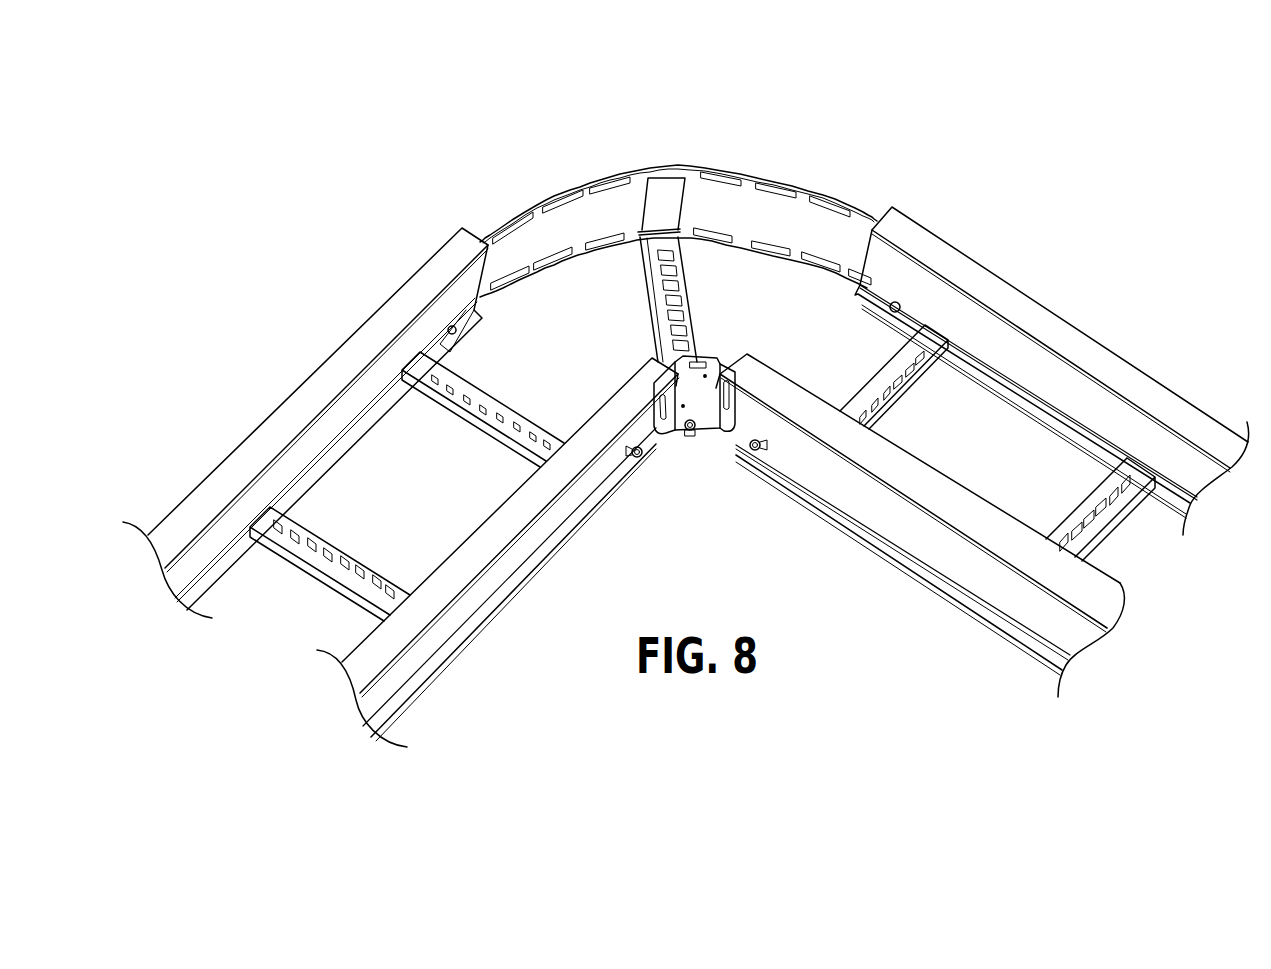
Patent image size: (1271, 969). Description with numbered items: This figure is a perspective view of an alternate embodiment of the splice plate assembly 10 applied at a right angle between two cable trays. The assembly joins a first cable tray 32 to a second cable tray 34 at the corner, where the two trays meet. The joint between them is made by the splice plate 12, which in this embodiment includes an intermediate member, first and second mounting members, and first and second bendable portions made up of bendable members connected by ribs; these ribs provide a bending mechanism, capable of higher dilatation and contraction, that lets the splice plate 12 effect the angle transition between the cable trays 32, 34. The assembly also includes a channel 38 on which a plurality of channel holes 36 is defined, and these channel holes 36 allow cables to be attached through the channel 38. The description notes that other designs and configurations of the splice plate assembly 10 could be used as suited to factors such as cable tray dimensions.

The splice plate assembly 10 is at (686, 409).
The splice plate 12 is at (691, 455).
The cable tray 32 is at (286, 336).
The cable tray 34 is at (1096, 308).
The channel holes 36 is at (675, 312).
The channel 38 is at (665, 232).